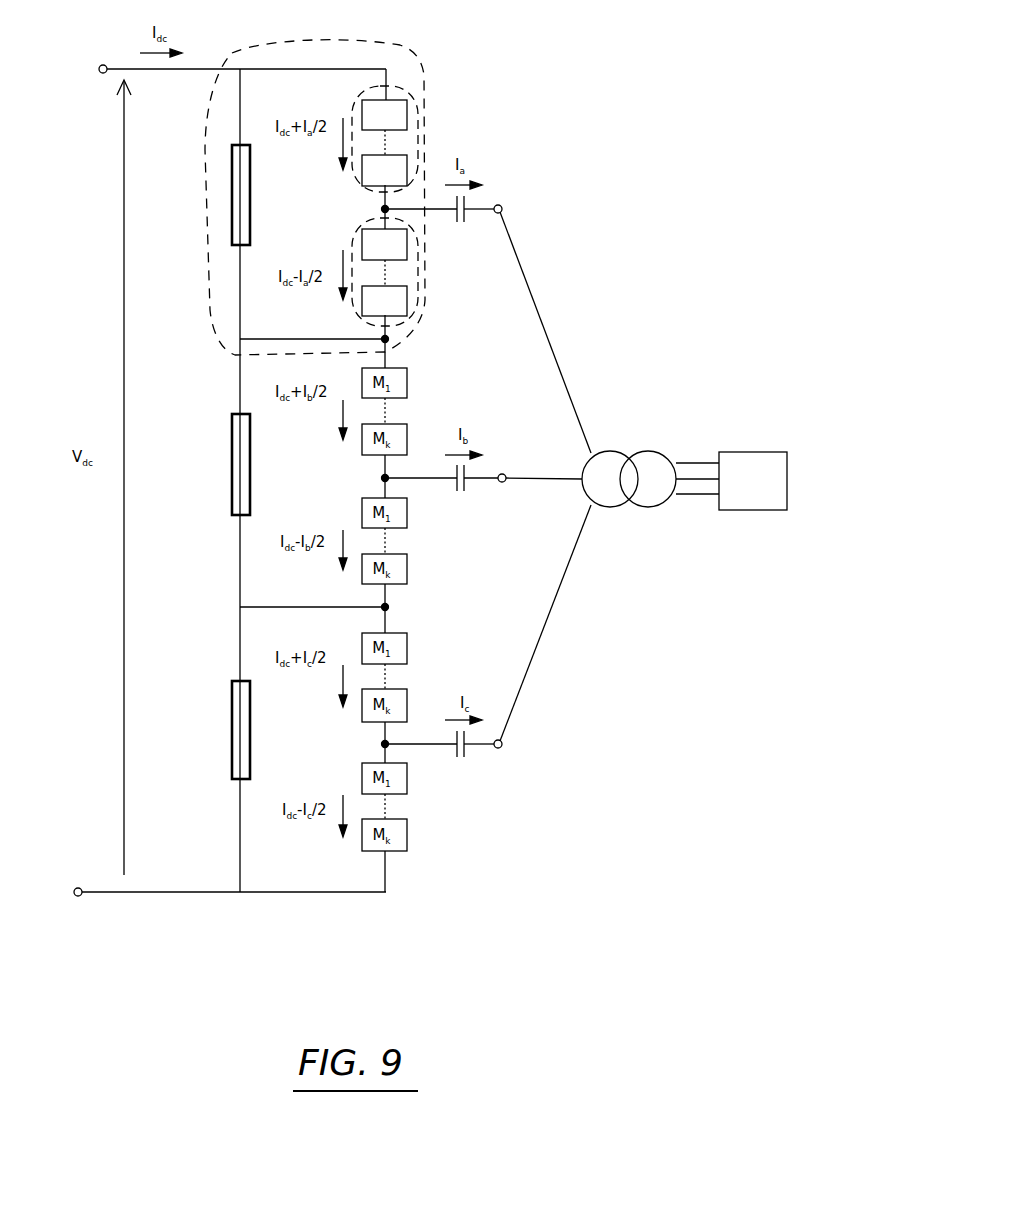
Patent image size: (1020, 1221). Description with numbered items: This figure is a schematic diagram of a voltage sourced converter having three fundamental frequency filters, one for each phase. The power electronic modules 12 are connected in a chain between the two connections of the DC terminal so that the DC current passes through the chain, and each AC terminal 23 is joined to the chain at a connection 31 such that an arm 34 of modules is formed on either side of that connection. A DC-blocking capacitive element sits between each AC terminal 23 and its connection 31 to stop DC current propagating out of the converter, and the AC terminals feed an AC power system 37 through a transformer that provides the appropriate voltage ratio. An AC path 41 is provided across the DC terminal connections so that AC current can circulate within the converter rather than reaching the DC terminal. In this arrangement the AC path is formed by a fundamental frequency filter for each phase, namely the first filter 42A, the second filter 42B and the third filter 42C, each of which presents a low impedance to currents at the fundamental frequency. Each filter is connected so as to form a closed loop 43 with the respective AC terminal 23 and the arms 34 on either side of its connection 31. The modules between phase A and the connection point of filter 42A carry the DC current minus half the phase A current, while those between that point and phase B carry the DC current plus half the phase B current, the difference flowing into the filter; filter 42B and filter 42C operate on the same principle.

The power electronic module 12 is at (398, 112).
The AC terminal 23 is at (506, 200).
The connection 31 is at (368, 212).
The arm 34 is at (360, 90).
The AC power system 37 is at (766, 452).
The AC path 41 is at (240, 900).
The first fundamental frequency filter 42A is at (232, 213).
The second fundamental frequency filter 42B is at (232, 487).
The third fundamental frequency filter 42C is at (232, 735).
The closed loop 43 is at (395, 50).